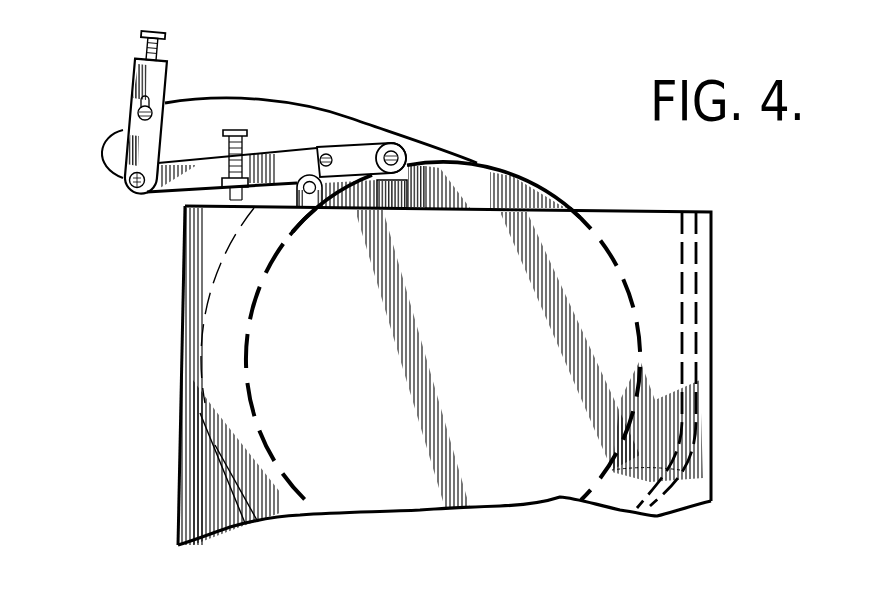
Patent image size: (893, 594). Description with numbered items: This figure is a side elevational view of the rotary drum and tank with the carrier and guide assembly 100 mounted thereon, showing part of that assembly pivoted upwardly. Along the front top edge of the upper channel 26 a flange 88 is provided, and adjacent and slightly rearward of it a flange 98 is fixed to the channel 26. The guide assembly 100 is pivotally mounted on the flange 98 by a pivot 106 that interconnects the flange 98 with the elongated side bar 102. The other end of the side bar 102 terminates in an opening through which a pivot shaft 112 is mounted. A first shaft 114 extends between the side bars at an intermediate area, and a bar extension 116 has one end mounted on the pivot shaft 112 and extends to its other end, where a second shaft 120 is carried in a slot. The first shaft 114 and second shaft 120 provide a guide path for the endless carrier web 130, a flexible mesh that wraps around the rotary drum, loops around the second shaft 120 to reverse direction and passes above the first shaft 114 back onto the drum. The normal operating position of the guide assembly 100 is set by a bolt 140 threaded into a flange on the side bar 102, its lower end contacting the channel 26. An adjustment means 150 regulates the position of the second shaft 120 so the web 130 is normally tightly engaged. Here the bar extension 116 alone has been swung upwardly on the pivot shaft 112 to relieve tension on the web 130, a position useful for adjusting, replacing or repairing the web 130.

The channel 26 is at (613, 208).
The flange 88 is at (305, 176).
The flange 98 is at (393, 189).
The carrier and guide assembly 100 is at (246, 84).
The side bar 102 is at (220, 175).
The pivot 106 is at (405, 148).
The pivot shaft 112 is at (125, 182).
The first shaft 114 is at (333, 158).
The bar extension 116 is at (137, 138).
The second shaft 120 is at (140, 107).
The endless carrier web 130 is at (300, 103).
The bolt 140 is at (217, 150).
The adjustment means 150 is at (132, 62).